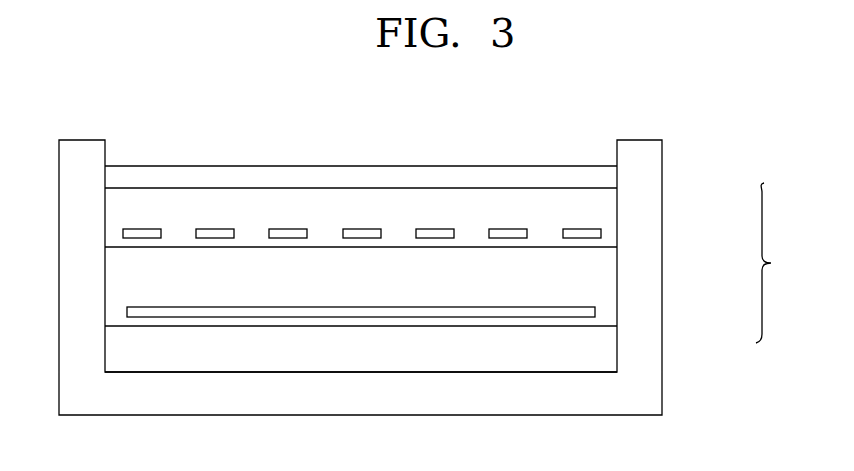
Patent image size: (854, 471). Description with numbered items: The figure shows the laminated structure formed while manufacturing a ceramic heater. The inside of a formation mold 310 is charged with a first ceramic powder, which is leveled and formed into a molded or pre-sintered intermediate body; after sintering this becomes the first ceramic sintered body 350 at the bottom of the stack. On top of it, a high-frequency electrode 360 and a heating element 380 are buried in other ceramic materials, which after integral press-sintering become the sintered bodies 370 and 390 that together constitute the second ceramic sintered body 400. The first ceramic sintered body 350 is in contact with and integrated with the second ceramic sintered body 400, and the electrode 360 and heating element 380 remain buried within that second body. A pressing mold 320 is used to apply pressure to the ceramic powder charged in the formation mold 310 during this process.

The formation mold 310 is at (84, 139).
The pressing mold 320 is at (170, 164).
The sintered body of ceramic material 390 is at (585, 212).
The heating element 380 is at (601, 232).
The sintered body of ceramic material 370 is at (590, 273).
The high-frequency electrode 360 is at (599, 315).
The first ceramic sintered body 350 is at (597, 355).
The second ceramic sintered body 400 is at (783, 263).